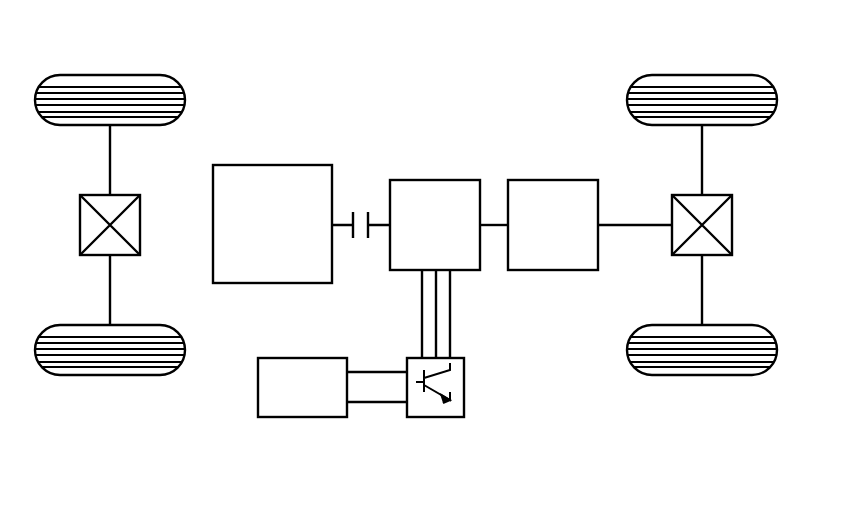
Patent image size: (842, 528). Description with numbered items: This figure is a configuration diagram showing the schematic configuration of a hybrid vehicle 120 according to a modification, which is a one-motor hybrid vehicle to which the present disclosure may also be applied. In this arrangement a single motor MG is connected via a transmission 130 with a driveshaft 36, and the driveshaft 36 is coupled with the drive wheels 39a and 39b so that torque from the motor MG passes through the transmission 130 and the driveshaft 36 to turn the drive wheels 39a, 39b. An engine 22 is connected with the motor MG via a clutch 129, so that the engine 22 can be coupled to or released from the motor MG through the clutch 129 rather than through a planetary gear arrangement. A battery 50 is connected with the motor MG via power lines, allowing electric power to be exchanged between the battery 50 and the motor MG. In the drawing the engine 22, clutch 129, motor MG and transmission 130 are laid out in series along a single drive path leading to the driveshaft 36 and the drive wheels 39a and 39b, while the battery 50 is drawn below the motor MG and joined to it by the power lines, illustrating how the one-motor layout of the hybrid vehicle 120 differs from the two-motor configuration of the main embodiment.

The hybrid vehicle 120 is at (502, 62).
The engine 22 is at (272, 165).
The clutch 129 is at (362, 208).
The motor MG is at (435, 180).
The transmission 130 is at (553, 180).
The driveshaft 36 is at (627, 222).
The drive wheel 39a is at (701, 75).
The drive wheel 39b is at (702, 375).
The battery 50 is at (302, 358).